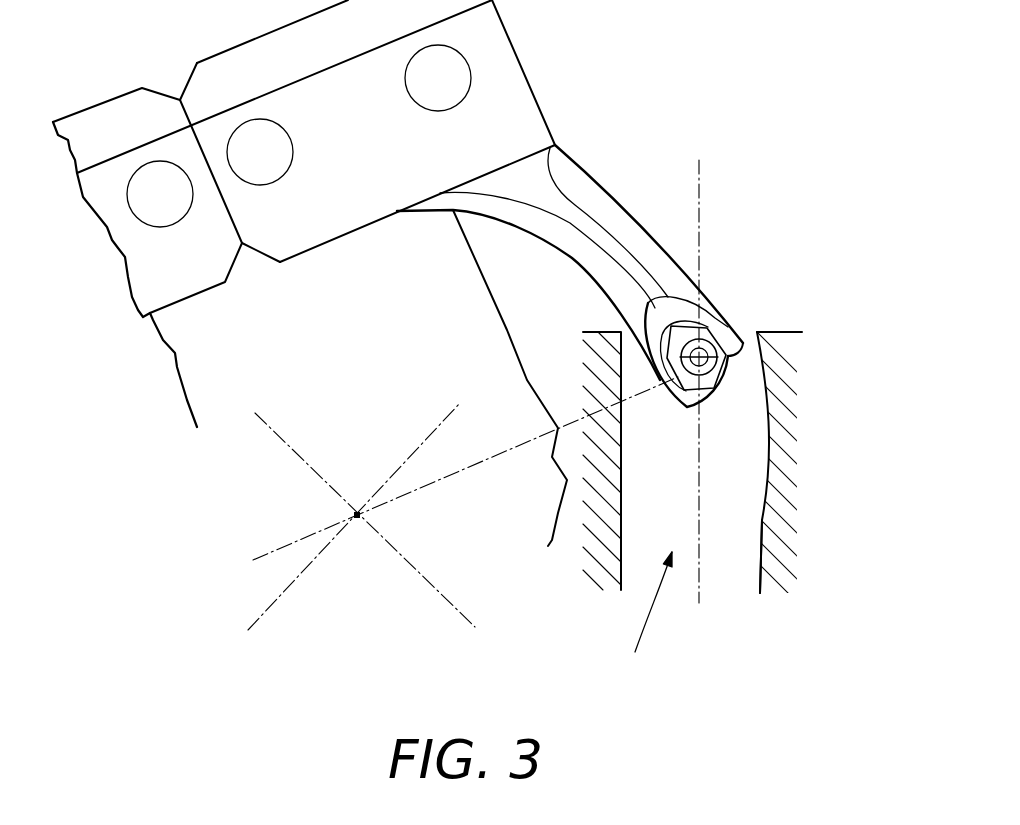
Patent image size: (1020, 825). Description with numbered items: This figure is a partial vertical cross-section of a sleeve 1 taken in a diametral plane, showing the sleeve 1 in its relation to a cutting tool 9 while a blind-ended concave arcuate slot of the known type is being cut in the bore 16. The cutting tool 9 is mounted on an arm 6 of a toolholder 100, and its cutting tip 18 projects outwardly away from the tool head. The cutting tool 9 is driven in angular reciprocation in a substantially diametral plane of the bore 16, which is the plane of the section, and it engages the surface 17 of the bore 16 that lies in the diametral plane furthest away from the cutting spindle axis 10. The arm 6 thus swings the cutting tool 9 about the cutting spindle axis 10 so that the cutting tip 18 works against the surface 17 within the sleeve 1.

The toolholder 100 is at (507, 93).
The arm 6 is at (582, 192).
The cutting tip 18 is at (745, 347).
The cutting tool 9 is at (725, 338).
The sleeve 1 is at (800, 343).
The cutting spindle axis 10 is at (357, 515).
The bore 16 is at (643, 622).
The surface 17 is at (760, 572).